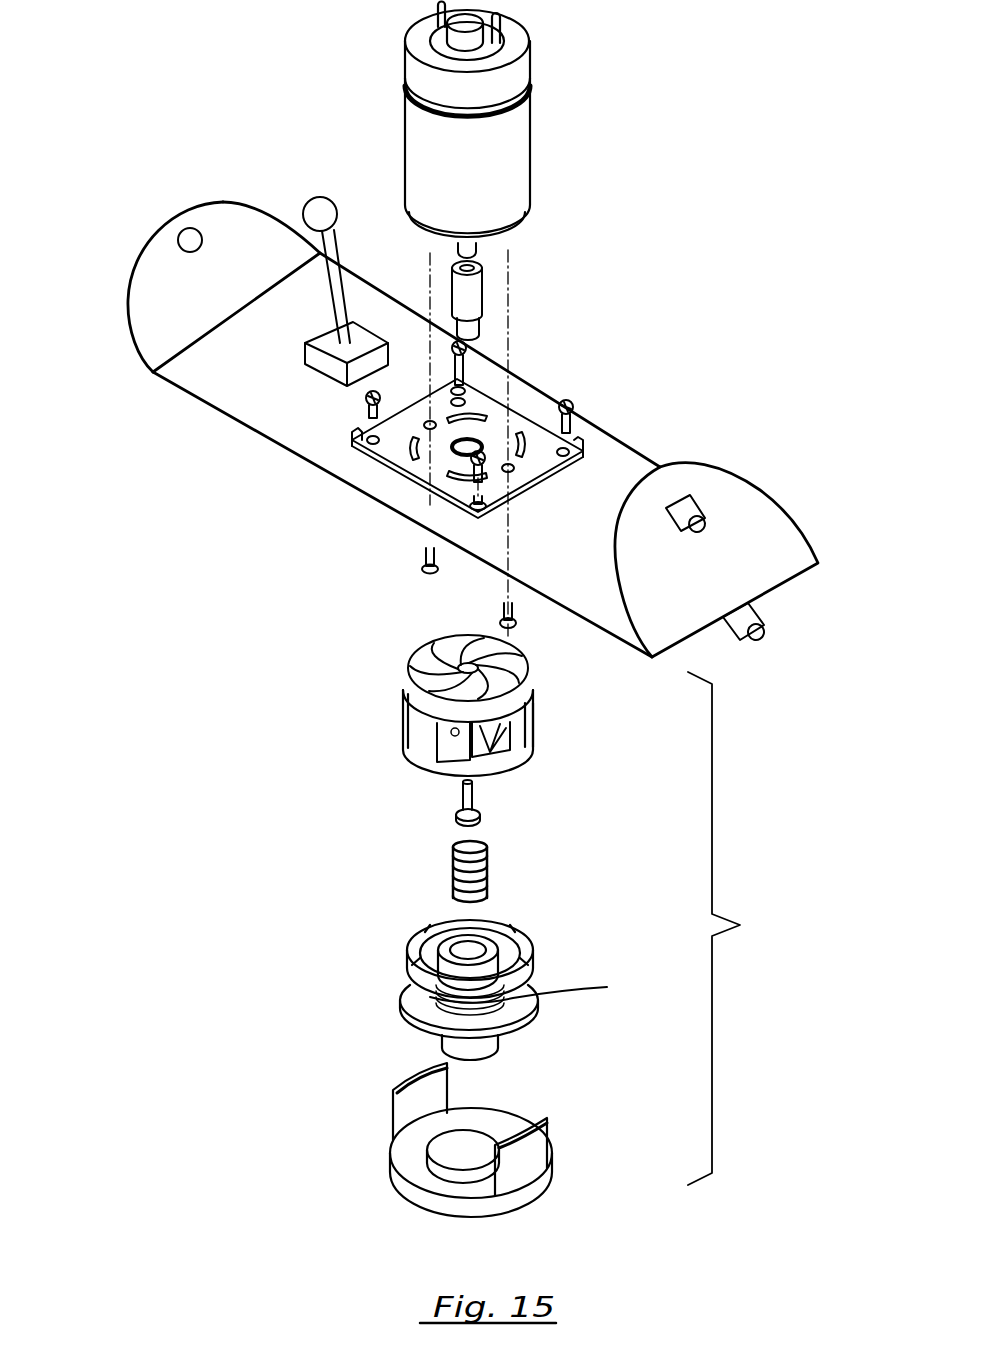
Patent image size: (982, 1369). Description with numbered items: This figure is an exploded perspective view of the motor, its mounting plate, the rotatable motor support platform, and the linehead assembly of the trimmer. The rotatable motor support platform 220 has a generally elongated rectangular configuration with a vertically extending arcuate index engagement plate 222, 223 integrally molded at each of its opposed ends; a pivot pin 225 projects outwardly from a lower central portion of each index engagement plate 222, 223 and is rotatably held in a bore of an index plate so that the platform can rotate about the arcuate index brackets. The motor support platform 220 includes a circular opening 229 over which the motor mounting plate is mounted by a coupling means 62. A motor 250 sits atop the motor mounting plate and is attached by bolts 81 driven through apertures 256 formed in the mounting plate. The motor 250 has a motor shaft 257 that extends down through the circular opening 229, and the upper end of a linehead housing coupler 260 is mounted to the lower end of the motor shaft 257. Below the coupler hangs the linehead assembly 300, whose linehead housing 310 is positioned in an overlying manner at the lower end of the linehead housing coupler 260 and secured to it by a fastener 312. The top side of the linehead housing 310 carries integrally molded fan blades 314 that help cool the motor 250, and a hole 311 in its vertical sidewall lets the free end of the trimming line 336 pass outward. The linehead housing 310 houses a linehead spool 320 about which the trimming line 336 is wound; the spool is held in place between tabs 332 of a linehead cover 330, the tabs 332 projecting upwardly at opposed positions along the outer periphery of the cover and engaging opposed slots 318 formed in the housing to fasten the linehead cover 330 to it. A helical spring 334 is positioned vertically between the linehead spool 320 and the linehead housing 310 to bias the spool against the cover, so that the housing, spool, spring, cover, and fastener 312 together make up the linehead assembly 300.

The rotatable motor support platform 220 is at (233, 418).
The index engagement plate 223 is at (150, 324).
The index engagement plate 222 is at (737, 490).
The motor 250 is at (532, 118).
The motor shaft 257 is at (478, 253).
The linehead housing coupler 260 is at (483, 302).
The aperture 256 is at (503, 467).
The coupling means 62 is at (568, 400).
The pivot pin 225 is at (440, 498).
The circular opening 229 is at (453, 450).
The bolt 81 is at (425, 568).
The linehead housing 310 is at (535, 698).
The fan blades 314 is at (513, 658).
The slot 318 is at (527, 743).
The hole 311 is at (442, 733).
The fastener 312 is at (462, 790).
The helical spring 334 is at (490, 878).
The linehead spool 320 is at (530, 947).
The trimming line 336 is at (430, 997).
The linehead cover 330 is at (393, 1153).
The tab 332 is at (400, 1085).
The linehead assembly 300 is at (739, 928).